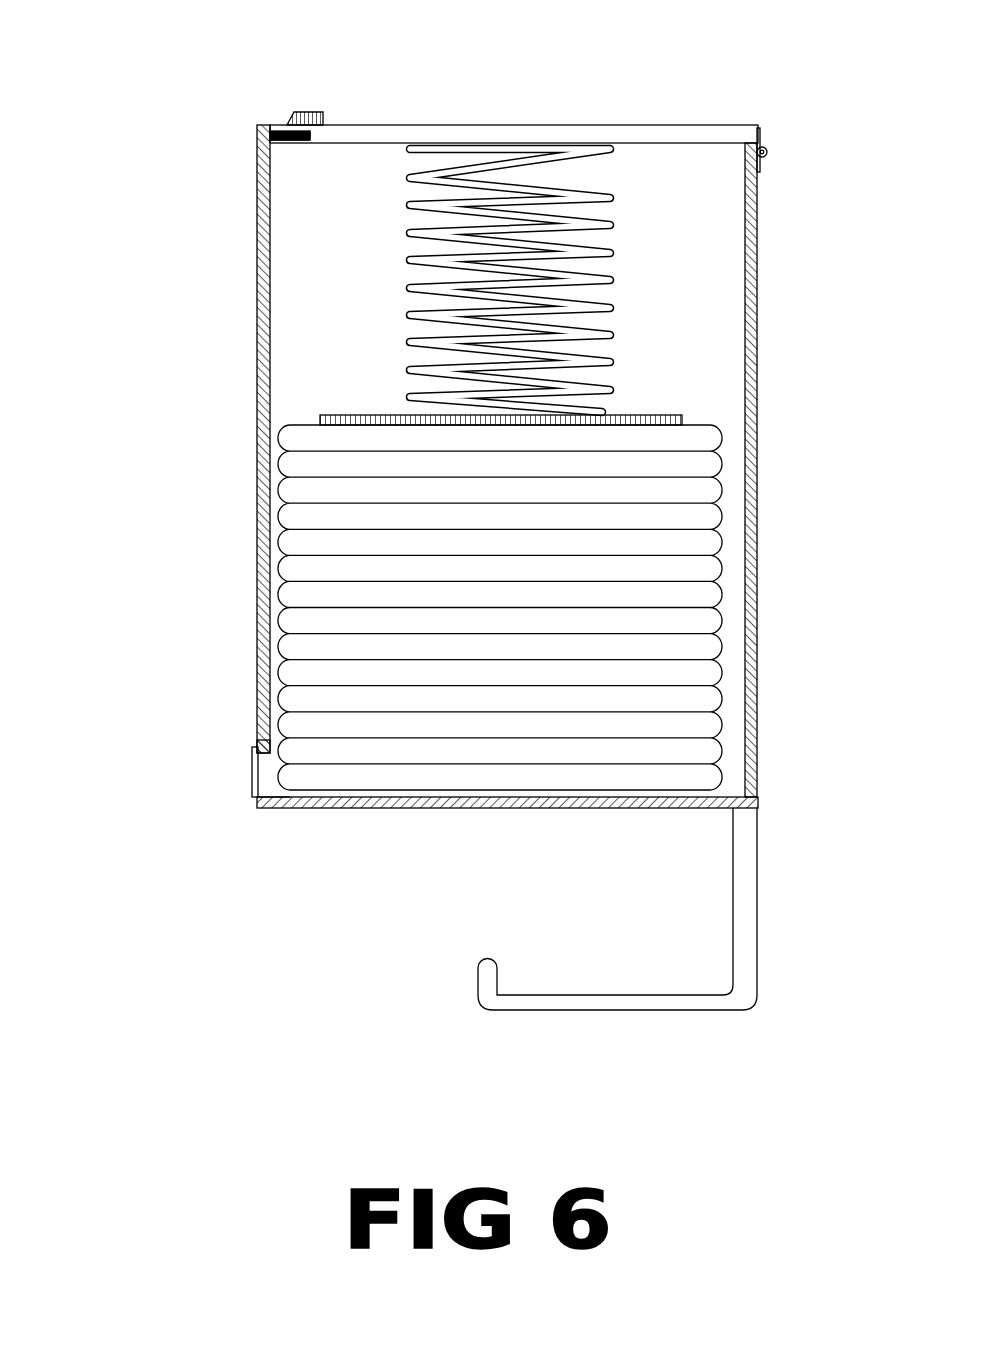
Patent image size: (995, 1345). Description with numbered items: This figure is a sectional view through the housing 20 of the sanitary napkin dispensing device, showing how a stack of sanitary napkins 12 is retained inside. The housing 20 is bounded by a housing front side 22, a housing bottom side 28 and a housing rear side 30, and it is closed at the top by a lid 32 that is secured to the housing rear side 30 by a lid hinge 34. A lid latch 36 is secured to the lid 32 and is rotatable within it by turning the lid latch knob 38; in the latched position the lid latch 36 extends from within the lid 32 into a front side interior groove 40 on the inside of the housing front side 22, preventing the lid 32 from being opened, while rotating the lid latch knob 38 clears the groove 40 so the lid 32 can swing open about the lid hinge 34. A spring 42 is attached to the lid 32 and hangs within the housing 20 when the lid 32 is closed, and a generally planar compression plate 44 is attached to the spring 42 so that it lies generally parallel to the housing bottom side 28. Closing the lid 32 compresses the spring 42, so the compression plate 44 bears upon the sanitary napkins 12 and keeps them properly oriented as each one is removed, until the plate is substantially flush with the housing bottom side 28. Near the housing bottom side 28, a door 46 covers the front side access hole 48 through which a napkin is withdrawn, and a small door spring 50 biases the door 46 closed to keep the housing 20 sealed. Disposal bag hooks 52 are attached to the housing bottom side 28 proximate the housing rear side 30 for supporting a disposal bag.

The sanitary napkin 12 is at (460, 583).
The housing 20 is at (258, 232).
The housing front side 22 is at (253, 503).
The housing bottom side 28 is at (330, 808).
The housing rear side 30 is at (758, 612).
The lid 32 is at (395, 128).
The lid hinge 34 is at (765, 160).
The lid latch 36 is at (295, 143).
The lid latch knob 38 is at (302, 107).
The front side interior groove 40 is at (262, 132).
The spring 42 is at (612, 303).
The compression plate 44 is at (683, 414).
The door 46 is at (250, 777).
The front side access hole 48 is at (272, 782).
The door spring 50 is at (262, 750).
The disposal bag hooks 52 is at (575, 995).